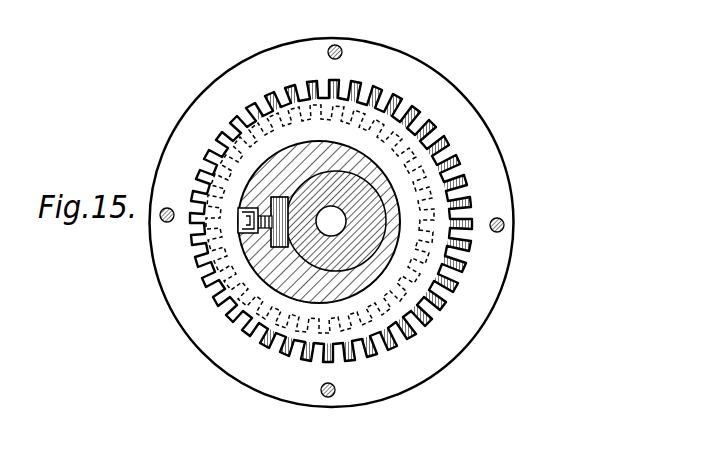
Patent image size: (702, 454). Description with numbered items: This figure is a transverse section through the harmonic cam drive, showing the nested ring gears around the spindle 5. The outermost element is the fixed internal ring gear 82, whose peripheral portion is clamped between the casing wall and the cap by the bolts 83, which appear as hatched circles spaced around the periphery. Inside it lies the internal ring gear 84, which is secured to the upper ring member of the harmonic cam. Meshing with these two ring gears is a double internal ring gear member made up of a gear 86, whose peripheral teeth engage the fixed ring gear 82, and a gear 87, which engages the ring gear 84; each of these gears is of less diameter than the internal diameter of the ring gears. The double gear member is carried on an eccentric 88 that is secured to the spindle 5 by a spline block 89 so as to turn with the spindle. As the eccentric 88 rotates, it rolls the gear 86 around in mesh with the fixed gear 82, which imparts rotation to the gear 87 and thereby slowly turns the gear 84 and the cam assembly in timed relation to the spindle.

The spindle 5 is at (331, 221).
The fixed internal ring gear 82 is at (471, 112).
The bolts 83 is at (340, 46).
The internal ring gear 84 is at (452, 231).
The gear 86 is at (456, 182).
The gear 87 is at (463, 273).
The eccentric 88 is at (329, 160).
The spline block 89 is at (281, 205).